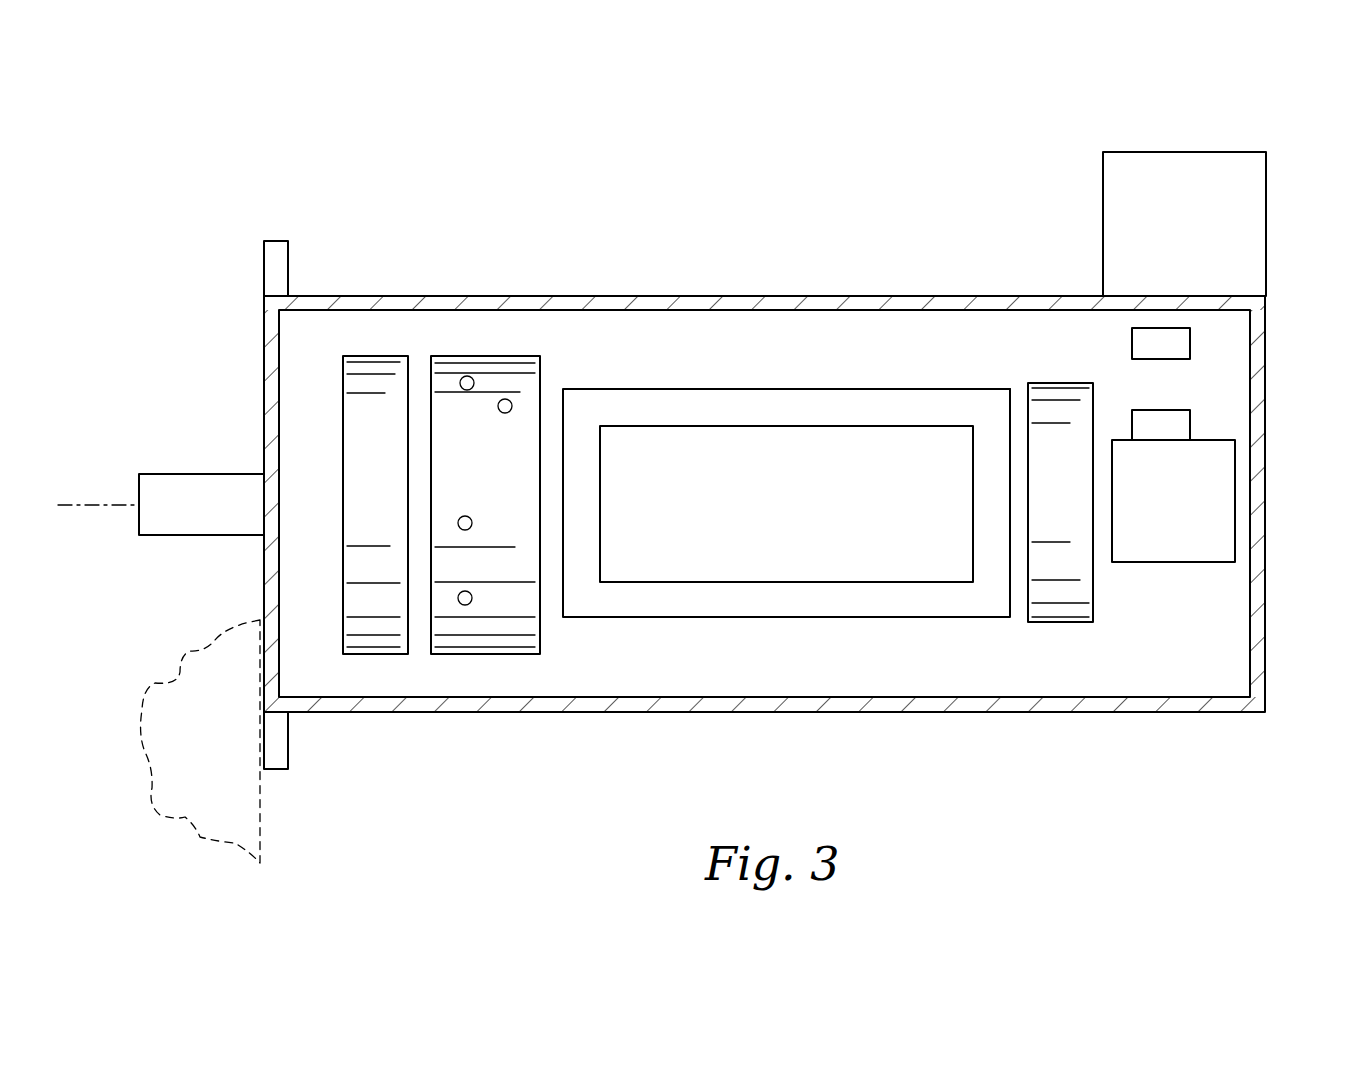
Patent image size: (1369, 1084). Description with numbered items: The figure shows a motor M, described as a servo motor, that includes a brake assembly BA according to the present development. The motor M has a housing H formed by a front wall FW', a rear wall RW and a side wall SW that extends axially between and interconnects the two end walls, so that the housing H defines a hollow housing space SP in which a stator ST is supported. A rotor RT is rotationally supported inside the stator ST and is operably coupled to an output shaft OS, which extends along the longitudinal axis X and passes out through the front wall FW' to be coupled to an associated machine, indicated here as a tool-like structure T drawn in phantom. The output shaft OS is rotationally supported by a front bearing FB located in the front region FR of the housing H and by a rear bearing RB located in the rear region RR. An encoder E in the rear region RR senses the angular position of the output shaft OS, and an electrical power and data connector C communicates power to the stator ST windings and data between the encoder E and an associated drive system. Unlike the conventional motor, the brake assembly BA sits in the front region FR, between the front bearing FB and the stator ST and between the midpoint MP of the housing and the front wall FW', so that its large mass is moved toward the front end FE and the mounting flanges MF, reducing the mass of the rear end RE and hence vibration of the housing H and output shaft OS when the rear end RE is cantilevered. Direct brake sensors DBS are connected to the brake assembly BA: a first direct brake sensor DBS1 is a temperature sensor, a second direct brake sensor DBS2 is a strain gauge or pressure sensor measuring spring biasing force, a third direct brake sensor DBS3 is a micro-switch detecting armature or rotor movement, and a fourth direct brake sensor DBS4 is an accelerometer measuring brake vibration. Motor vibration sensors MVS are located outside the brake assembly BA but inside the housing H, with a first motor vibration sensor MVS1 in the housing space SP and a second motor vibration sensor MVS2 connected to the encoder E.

The motor M is at (752, 493).
The midpoint MP is at (765, 292).
The side wall SW is at (922, 712).
The front end FE is at (307, 295).
The rear wall RW is at (1266, 330).
The front wall FW' is at (214, 359).
The front region FR is at (541, 713).
The motor housing H is at (846, 713).
The rear region RR is at (1172, 712).
The rear end RE is at (1072, 292).
The mounting flanges MF is at (275, 261).
The output shaft OS is at (196, 493).
The longitudinal axis X is at (82, 505).
The tool T is at (185, 817).
The electrical power and data connector C is at (1185, 152).
The front bearing FB is at (380, 655).
The brake assembly BA is at (477, 656).
The direct brake sensors DBS is at (525, 430).
The first direct brake sensor DBS1 is at (467, 376).
The second direct brake sensor DBS2 is at (505, 399).
The third direct brake sensor DBS3 is at (465, 516).
The fourth direct brake sensor DBS4 is at (465, 591).
The stator ST is at (663, 388).
The rotor RT is at (812, 425).
The housing space SP is at (858, 353).
The rear bearing RB is at (1062, 627).
The encoder E is at (1182, 562).
The motor vibration sensors MVS is at (1163, 354).
The first motor vibration sensor MVS1 is at (1173, 347).
The second motor vibration sensor MVS2 is at (1164, 425).